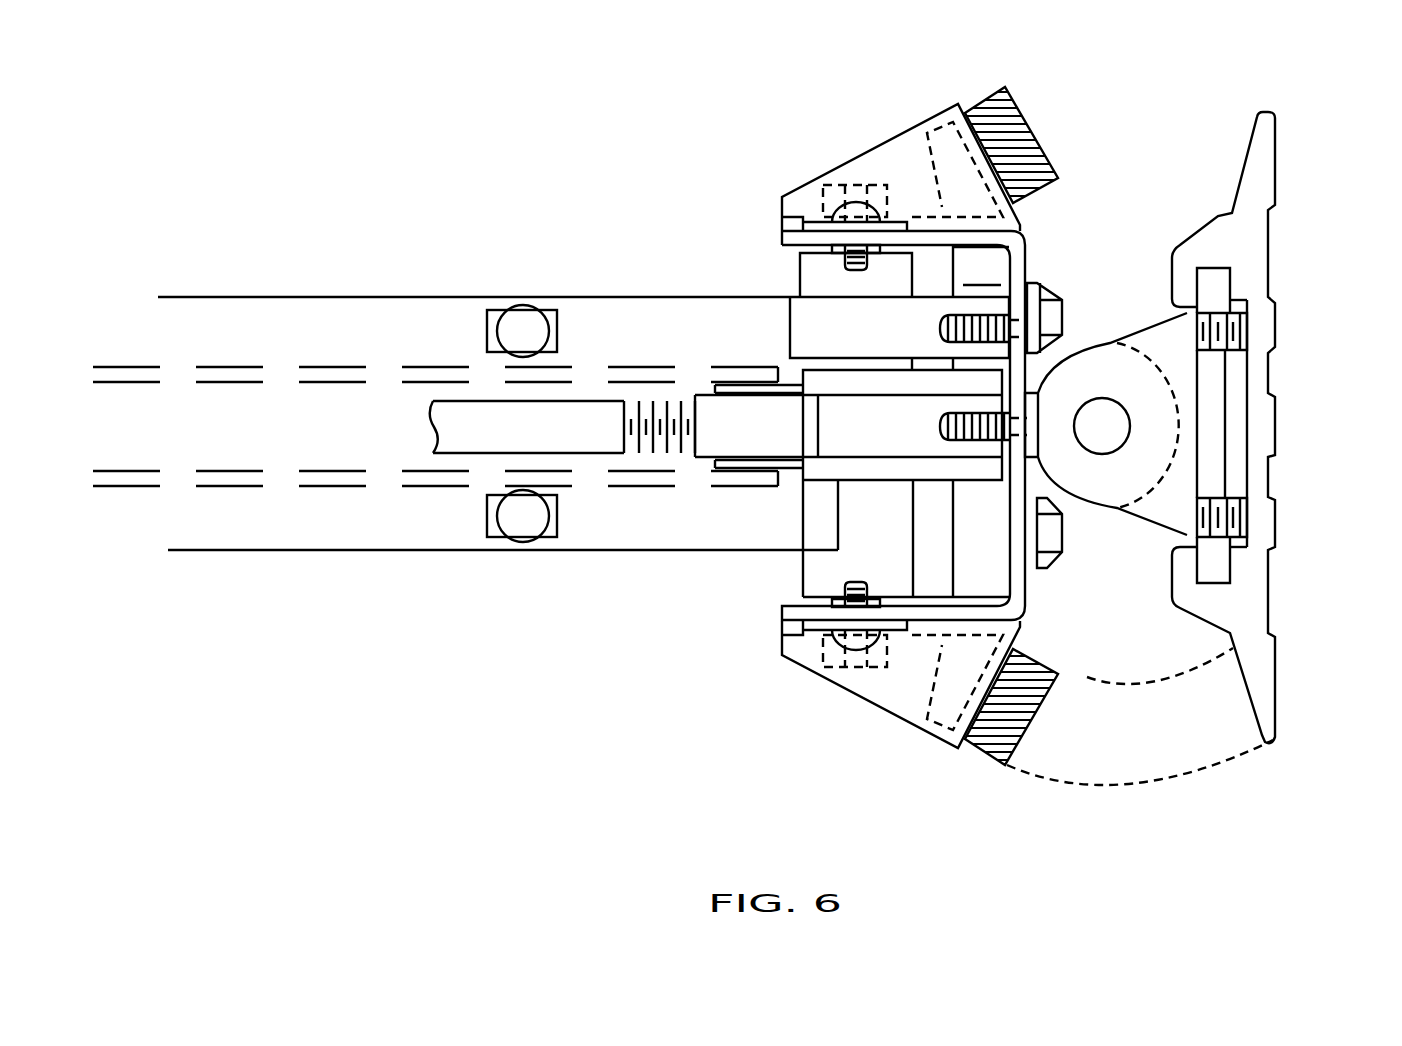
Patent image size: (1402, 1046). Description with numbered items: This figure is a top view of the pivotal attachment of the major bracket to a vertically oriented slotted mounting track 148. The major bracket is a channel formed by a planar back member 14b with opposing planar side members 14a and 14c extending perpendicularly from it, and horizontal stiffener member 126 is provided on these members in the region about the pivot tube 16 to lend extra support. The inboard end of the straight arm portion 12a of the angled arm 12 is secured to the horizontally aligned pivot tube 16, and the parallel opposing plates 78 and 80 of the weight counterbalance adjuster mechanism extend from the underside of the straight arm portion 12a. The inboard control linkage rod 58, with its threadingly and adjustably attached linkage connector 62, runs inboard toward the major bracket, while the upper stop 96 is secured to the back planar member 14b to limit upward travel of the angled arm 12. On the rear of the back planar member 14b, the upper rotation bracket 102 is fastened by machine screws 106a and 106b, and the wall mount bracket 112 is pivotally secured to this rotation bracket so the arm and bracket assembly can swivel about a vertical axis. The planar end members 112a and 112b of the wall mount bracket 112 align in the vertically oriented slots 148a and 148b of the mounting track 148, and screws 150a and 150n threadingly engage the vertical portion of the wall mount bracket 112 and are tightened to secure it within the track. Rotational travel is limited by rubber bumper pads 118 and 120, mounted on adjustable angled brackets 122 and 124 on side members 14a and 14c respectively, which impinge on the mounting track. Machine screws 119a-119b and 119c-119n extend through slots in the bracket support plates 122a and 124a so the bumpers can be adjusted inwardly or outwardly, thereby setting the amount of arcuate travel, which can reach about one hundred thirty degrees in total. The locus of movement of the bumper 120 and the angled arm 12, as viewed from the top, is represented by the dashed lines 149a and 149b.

The angled arm 12 is at (397, 330).
The straight arm portion 12a is at (588, 330).
The planar side member 14a is at (780, 243).
The planar back member 14b is at (1030, 233).
The planar side member 14c is at (782, 612).
The pivot tube 16 is at (818, 285).
The inboard control linkage rod 58 is at (497, 430).
The linkage connector 62 is at (738, 440).
The plate 78 is at (318, 366).
The plate 80 is at (337, 485).
The upper stop 96 is at (795, 330).
The upper rotation bracket 102 is at (1082, 512).
The machine screw 106a is at (1052, 548).
The machine screw 106b is at (1052, 303).
The wall mount bracket 112 is at (1163, 320).
The planar end member 112a is at (1217, 282).
The planar end member 112b is at (1217, 577).
The rubber bumper pad 118 is at (1027, 123).
The machine screws 119a-119b is at (823, 173).
The machine screws 119c-119n is at (825, 660).
The rubber bumper pad 120 is at (1020, 712).
The adjustable angled bracket 122 is at (875, 170).
The bracket support plate 122a is at (918, 128).
The adjustable angled bracket 124 is at (858, 677).
The bracket support plate 124a is at (905, 688).
The horizontal stiffener member 126 is at (981, 272).
The slotted mounting track 148 is at (1248, 245).
The slot 148a is at (1230, 284).
The slot 148b is at (1233, 567).
The dashed line 149a is at (1087, 677).
The dashed line 149b is at (1165, 787).
The screw 150a is at (1240, 340).
The screw 150n is at (1240, 522).